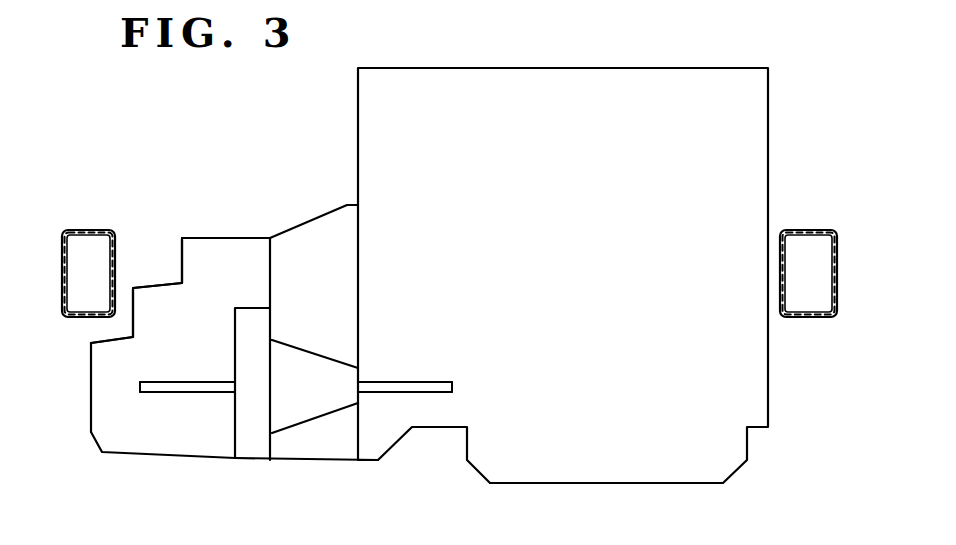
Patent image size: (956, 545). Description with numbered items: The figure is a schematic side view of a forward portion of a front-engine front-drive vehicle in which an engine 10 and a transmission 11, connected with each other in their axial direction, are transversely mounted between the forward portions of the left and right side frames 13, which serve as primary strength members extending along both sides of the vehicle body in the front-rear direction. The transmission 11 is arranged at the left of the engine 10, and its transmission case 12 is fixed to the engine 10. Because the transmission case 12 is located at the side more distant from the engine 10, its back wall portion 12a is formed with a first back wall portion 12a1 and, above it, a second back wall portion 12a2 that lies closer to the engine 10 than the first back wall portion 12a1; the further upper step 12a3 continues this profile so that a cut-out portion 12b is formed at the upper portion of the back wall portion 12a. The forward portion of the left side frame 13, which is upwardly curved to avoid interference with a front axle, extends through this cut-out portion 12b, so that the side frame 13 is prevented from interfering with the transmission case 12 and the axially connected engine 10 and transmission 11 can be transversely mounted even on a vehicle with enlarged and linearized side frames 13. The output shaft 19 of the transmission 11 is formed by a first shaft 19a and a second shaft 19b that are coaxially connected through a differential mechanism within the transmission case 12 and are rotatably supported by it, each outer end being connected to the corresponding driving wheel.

The engine 10 is at (578, 65).
The transmission 11 is at (174, 177).
The transmission case 12 is at (234, 239).
The back wall portion 12a is at (89, 391).
The first back wall portion 12a1 is at (88, 418).
The second back wall portion 12a2 is at (132, 313).
The upper step portion of side wall 12a3 is at (182, 267).
The cut-out portion 12b is at (128, 246).
The side frame 13 is at (90, 230).
The output shaft 19 is at (403, 381).
The first shaft 19a is at (193, 392).
The second shaft 19b is at (435, 393).